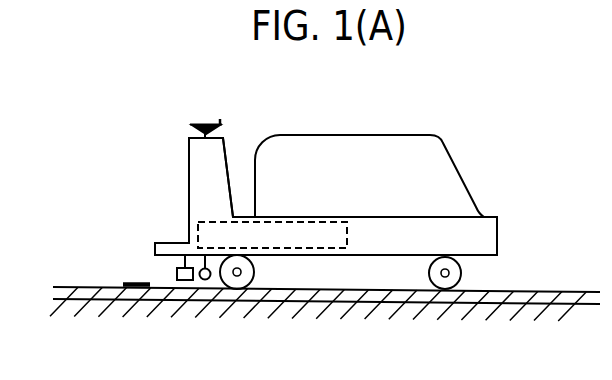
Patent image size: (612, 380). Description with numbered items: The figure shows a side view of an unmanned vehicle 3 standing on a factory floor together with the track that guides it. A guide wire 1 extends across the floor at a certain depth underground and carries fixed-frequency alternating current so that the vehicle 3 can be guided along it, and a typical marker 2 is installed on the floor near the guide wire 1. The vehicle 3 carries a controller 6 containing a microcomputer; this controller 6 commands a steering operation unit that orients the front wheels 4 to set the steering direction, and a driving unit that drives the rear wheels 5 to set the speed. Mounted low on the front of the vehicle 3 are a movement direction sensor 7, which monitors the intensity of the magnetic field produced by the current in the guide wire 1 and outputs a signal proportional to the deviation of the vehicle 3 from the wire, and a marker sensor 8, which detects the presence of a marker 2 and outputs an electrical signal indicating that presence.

The guide wire 1 is at (309, 300).
The marker 2 is at (125, 283).
The unmanned vehicle 3 is at (202, 175).
The front wheels 4 is at (254, 269).
The rear wheels 5 is at (461, 272).
The controller 6 is at (208, 238).
The movement direction sensor 7 is at (206, 280).
The marker sensor 8 is at (189, 281).